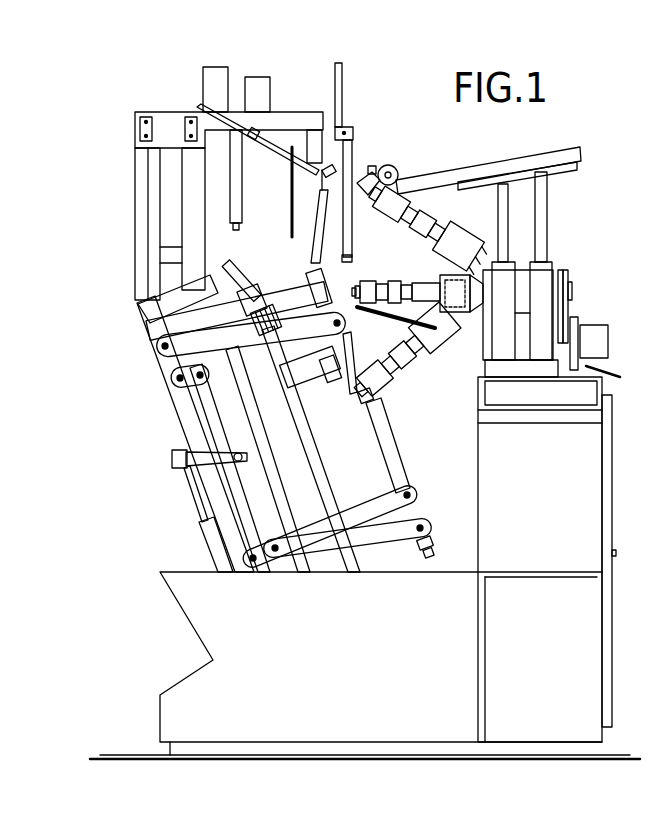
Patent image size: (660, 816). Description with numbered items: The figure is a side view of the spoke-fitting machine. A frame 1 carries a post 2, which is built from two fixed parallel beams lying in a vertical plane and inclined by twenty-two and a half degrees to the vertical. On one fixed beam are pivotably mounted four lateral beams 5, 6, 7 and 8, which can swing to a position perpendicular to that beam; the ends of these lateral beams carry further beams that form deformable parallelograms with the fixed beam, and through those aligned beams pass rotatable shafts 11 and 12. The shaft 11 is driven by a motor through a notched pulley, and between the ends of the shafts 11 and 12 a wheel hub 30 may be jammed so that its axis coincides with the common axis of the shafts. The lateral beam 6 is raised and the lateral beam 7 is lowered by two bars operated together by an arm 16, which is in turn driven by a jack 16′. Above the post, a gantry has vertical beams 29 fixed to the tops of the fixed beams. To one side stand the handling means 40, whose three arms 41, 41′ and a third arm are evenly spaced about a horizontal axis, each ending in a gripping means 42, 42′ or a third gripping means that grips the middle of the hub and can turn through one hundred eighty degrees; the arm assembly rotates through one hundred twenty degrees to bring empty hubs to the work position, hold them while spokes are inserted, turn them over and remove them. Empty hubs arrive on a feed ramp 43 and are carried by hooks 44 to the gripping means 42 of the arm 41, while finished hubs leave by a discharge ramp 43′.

The frame 1 is at (208, 600).
The post 2 is at (168, 412).
The lateral beam 5 is at (156, 337).
The lateral beam 6 is at (258, 351).
The lateral beam 7 is at (333, 520).
The lateral beam 8 is at (396, 541).
The shaft 11 is at (298, 327).
The shaft 12 is at (364, 408).
The arm 16 is at (197, 466).
The jack 16′ is at (214, 533).
The vertical beam 29 is at (283, 217).
The wheel hub 30 is at (398, 168).
The handling means 40 is at (586, 280).
The arm 41 is at (425, 358).
The arm 41′ is at (466, 243).
The gripping means 42 is at (373, 401).
The gripping means 42′ is at (373, 172).
The ramp 43 is at (474, 172).
The ramp 43′ is at (407, 329).
The hooks 44 is at (355, 160).